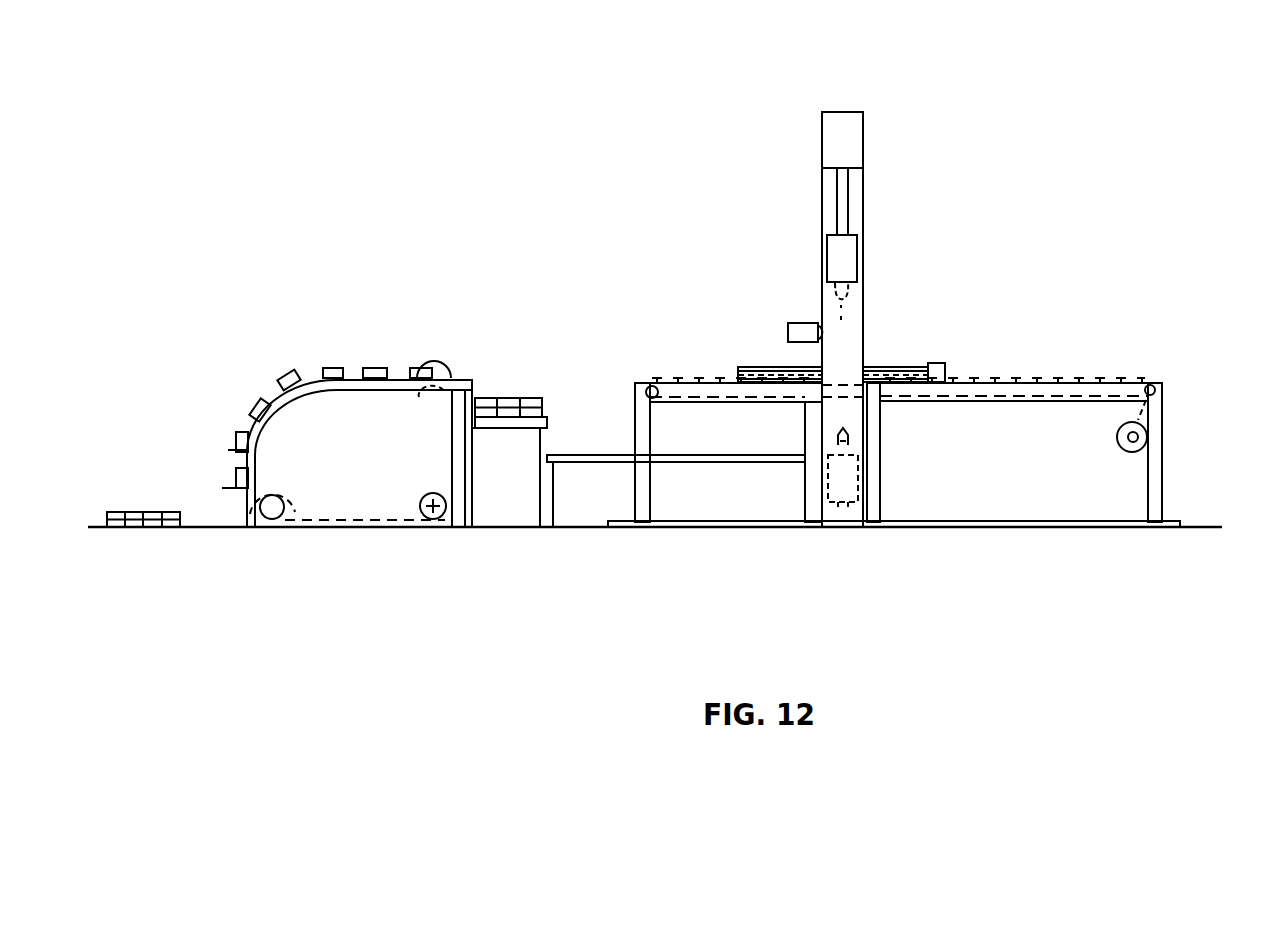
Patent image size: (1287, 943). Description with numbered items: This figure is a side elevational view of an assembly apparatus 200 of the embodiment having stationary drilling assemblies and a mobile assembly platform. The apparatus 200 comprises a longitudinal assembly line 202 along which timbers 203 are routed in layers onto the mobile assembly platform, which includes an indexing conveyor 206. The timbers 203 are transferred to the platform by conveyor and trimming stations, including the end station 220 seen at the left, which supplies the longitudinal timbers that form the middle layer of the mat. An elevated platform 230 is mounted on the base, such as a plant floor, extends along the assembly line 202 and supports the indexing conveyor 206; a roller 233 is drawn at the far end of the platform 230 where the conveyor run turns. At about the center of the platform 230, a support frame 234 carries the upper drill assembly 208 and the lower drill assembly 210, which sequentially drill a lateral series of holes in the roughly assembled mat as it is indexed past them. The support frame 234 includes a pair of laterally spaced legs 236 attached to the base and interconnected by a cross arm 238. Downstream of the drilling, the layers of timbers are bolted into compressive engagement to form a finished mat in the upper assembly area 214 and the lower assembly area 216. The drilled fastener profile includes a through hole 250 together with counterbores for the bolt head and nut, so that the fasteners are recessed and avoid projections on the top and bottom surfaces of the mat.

The assembly apparatus 200 is at (553, 243).
The longitudinal assembly line 202 is at (686, 364).
The timbers 203 is at (434, 390).
The indexing conveyor 206 is at (695, 416).
The upper drill assembly 208 is at (857, 265).
The lower drill assembly 210 is at (862, 467).
The upper assembly area 214 is at (1014, 336).
The lower assembly area 216 is at (1014, 452).
The end station 220 is at (325, 355).
The elevated platform 230 is at (1163, 388).
The belt roller 233 is at (1143, 438).
The support frame 234 is at (863, 202).
The legs 236 is at (830, 207).
The cross arm 238 is at (903, 106).
The through hole 250 is at (898, 354).